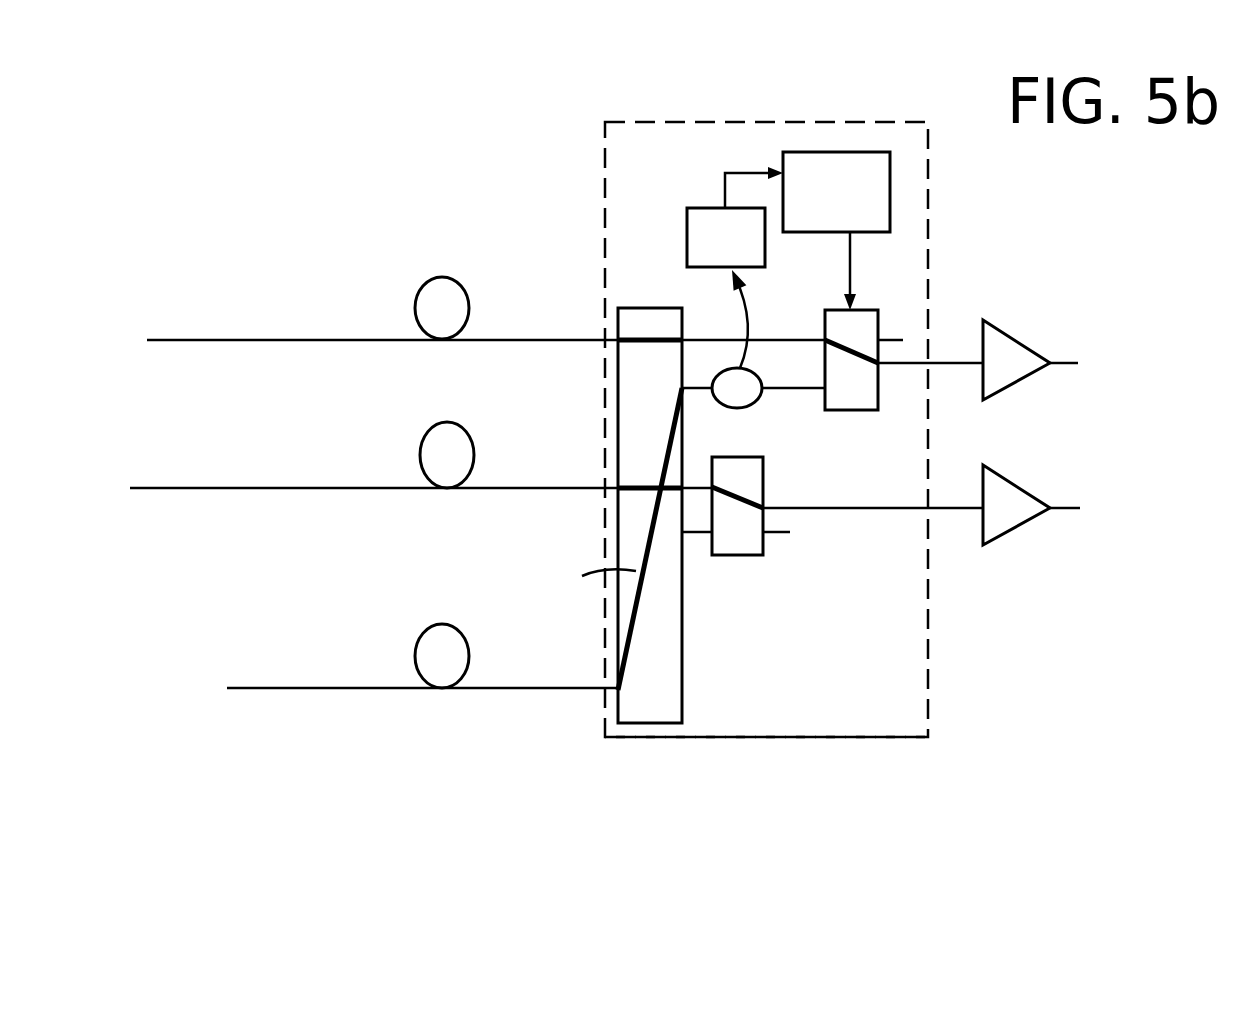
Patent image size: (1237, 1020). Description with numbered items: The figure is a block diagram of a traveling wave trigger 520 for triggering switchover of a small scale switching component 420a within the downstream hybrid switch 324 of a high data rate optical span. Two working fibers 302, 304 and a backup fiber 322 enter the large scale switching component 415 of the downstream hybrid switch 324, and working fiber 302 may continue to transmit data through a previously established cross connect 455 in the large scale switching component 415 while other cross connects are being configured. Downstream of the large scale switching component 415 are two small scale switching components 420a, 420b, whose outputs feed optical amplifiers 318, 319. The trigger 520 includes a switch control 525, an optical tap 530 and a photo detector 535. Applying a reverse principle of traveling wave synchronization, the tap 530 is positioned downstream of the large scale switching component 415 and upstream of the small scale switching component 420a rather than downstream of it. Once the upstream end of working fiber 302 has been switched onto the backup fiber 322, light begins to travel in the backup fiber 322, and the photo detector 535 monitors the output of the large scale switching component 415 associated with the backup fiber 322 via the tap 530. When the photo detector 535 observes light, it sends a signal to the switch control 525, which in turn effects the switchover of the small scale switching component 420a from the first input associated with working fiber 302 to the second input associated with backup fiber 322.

The working fiber 302 is at (375, 341).
The working fiber 304 is at (571, 489).
The backup fiber 322 is at (370, 690).
The optical amplifier 318 is at (1007, 342).
The optical amplifier 319 is at (995, 493).
The downstream hybrid switch 324 is at (745, 727).
The large scale switching component 415 is at (663, 712).
The small scale switching component 420a is at (857, 400).
The small scale switching component 420b is at (732, 557).
The cross connect 455 is at (640, 342).
The traveling wave trigger 520 is at (695, 167).
The switch control 525 is at (862, 206).
The optical tap 530 is at (738, 393).
The photo detector 535 is at (752, 251).